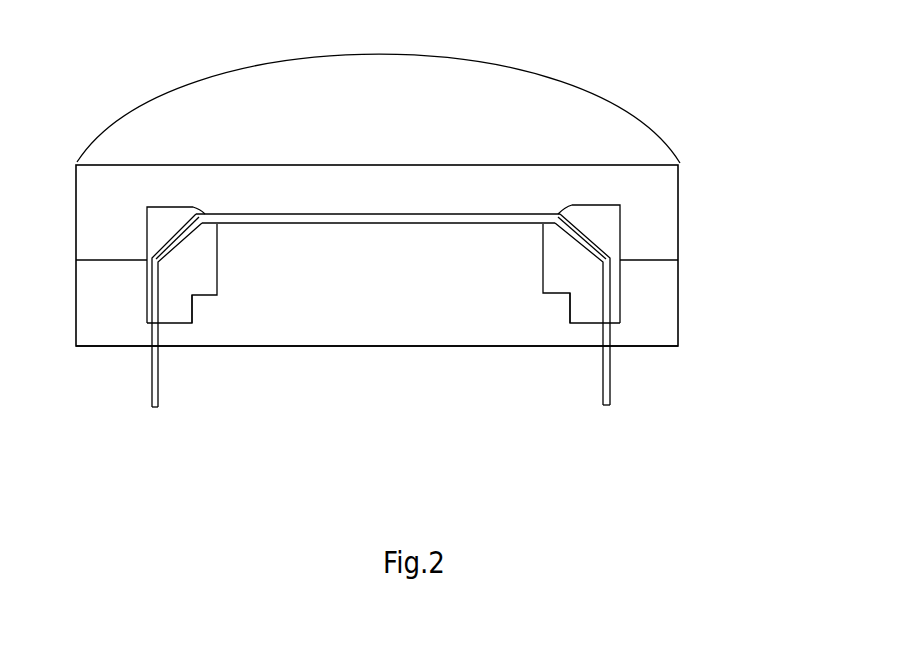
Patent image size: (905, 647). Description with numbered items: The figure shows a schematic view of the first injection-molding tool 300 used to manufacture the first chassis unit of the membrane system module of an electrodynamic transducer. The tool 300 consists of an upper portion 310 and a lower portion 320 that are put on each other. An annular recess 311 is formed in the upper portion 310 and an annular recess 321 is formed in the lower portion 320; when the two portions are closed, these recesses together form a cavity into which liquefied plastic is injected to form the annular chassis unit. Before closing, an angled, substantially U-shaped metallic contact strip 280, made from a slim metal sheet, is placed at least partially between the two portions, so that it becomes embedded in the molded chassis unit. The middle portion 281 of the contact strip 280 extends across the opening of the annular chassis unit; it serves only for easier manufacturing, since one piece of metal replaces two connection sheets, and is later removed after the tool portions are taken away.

The first injection-molding tool 300 is at (703, 205).
The upper portion 310 is at (378, 108).
The annular recess 311 is at (163, 227).
The lower portion 320 is at (422, 330).
The annular recess 321 is at (177, 308).
The contact strip 280 is at (612, 385).
The middle portion 281 is at (353, 215).